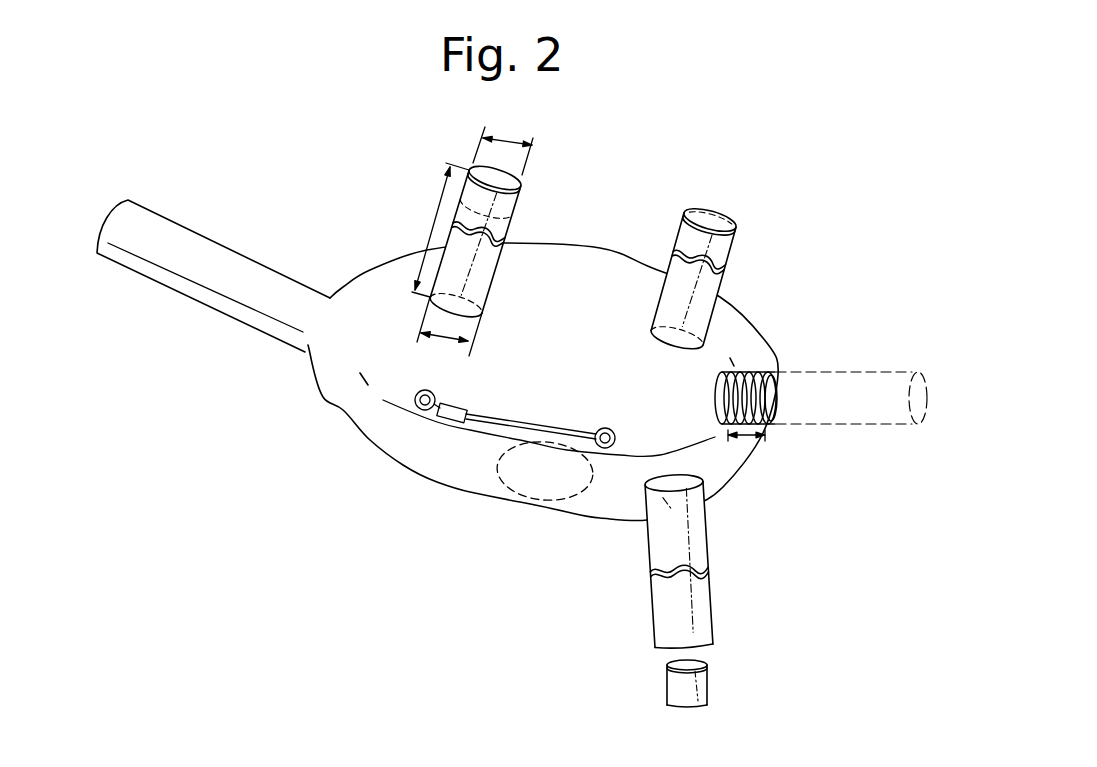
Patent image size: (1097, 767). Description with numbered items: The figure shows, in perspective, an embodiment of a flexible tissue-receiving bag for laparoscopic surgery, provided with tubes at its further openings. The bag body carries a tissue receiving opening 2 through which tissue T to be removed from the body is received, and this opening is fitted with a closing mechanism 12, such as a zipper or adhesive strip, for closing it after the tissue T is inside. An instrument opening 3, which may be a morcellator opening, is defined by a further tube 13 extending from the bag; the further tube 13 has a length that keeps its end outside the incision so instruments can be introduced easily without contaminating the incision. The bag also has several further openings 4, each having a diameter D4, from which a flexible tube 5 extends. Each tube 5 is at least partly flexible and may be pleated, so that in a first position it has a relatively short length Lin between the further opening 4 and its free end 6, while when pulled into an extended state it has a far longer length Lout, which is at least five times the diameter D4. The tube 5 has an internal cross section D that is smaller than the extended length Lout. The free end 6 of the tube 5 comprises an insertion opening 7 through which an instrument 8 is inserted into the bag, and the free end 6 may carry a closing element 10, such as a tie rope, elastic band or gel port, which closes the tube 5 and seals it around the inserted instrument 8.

The tissue receiving opening 2 is at (485, 428).
The instrument opening 3 is at (98, 212).
The further opening 4 is at (702, 314).
The flexible tube 5 is at (667, 297).
The free end 6 is at (732, 236).
The insertion opening 7 is at (716, 208).
The instrument 8 is at (690, 686).
The closing element 10 is at (490, 207).
The closing mechanism 12 is at (447, 417).
The further tube 13 is at (220, 267).
The tissue T is at (500, 465).
The internal cross section D is at (503, 143).
The diameter of the further opening D4 is at (449, 340).
The extended length Lout is at (418, 230).
The short length Lin is at (745, 440).